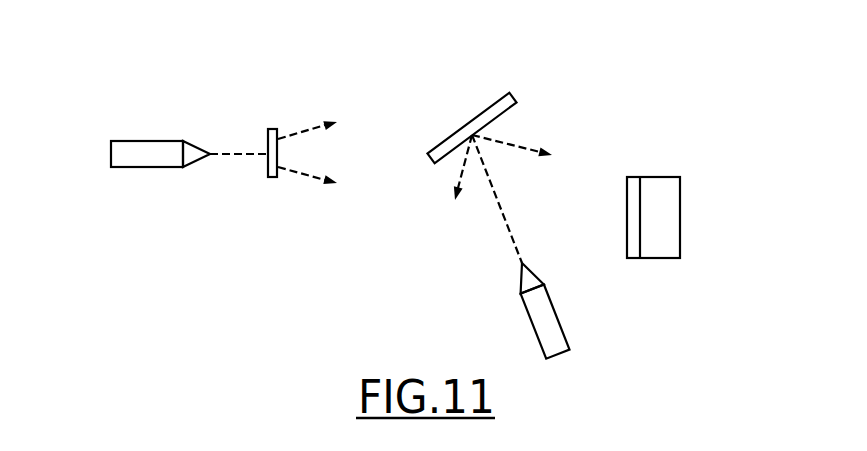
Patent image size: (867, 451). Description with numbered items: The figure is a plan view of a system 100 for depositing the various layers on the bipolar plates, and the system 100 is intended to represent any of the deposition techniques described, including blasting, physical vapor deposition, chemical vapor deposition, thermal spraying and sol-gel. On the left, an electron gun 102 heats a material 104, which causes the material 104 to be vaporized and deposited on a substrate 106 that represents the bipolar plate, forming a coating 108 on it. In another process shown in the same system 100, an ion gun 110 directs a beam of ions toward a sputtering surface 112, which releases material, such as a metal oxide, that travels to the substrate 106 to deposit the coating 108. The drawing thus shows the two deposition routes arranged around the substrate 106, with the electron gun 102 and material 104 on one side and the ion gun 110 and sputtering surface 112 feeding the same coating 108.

The system 100 is at (327, 73).
The electron gun 102 is at (147, 145).
The material 104 is at (273, 178).
The substrate 106 is at (668, 218).
The coating 108 is at (631, 208).
The ion gun 110 is at (553, 323).
The sputtering surface 112 is at (467, 120).